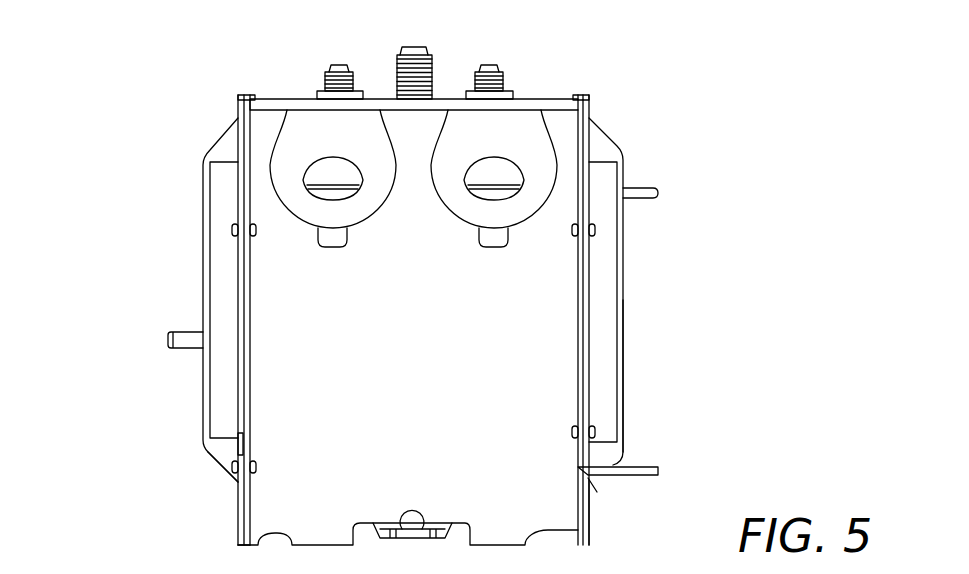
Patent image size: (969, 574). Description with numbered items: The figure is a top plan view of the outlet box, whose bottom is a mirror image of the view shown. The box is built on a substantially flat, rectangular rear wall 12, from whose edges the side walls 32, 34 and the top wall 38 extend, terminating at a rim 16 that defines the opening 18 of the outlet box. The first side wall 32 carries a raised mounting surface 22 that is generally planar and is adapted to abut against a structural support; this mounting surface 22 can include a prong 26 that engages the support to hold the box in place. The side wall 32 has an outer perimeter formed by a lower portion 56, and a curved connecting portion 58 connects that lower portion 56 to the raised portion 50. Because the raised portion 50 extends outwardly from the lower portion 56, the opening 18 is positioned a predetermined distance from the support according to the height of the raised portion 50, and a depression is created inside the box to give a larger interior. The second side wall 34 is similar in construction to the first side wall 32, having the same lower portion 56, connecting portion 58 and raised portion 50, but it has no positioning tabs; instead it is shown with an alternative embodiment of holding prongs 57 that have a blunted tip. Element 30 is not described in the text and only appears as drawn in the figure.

The rear wall 12 is at (287, 99).
The rim 16 is at (245, 545).
The opening 18 is at (587, 535).
The mounting surface 22 is at (620, 378).
The prong 26 is at (655, 186).
The mounting tab 30 is at (643, 470).
The side wall 32 is at (590, 515).
The second side wall 34 is at (238, 497).
The top wall 38 is at (568, 135).
The raised portion 50 is at (203, 205).
The lower portion 56 is at (237, 108).
The holding prongs 57 is at (168, 340).
The connecting portion 58 is at (226, 171).